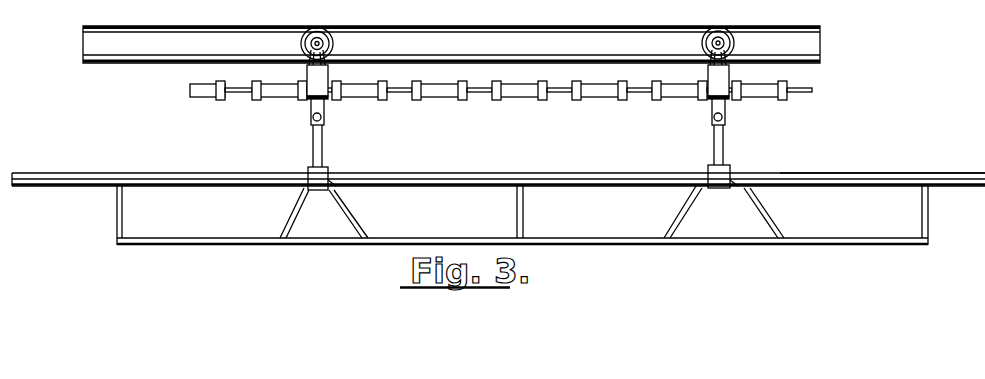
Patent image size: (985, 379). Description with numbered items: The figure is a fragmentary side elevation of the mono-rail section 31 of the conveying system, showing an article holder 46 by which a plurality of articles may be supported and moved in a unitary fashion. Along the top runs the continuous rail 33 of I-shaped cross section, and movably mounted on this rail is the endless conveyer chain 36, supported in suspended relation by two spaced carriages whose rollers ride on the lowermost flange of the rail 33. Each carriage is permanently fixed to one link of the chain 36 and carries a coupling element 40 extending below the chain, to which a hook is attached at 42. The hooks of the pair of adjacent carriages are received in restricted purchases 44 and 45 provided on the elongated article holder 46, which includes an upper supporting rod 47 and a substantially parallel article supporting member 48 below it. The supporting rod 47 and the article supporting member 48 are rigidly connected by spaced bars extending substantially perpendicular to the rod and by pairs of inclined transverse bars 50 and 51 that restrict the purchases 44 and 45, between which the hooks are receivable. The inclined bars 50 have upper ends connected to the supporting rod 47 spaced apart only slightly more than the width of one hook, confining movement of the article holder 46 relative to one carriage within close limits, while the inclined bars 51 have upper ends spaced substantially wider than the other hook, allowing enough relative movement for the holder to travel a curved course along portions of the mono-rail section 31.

The mono-rail section 31 is at (508, 25).
The continuous rail 33 is at (425, 30).
The endless conveyer chain 36 is at (358, 84).
The coupling element 40 is at (714, 108).
The hook attachment point 42 is at (723, 115).
The restricted purchase 44 is at (333, 182).
The restricted purchase 45 is at (747, 182).
The article holder 46 is at (137, 173).
The supporting rod 47 is at (870, 173).
The article supporting member 48 is at (863, 243).
The inclined transverse bar 50 is at (347, 208).
The inclined transverse bar 51 is at (683, 212).